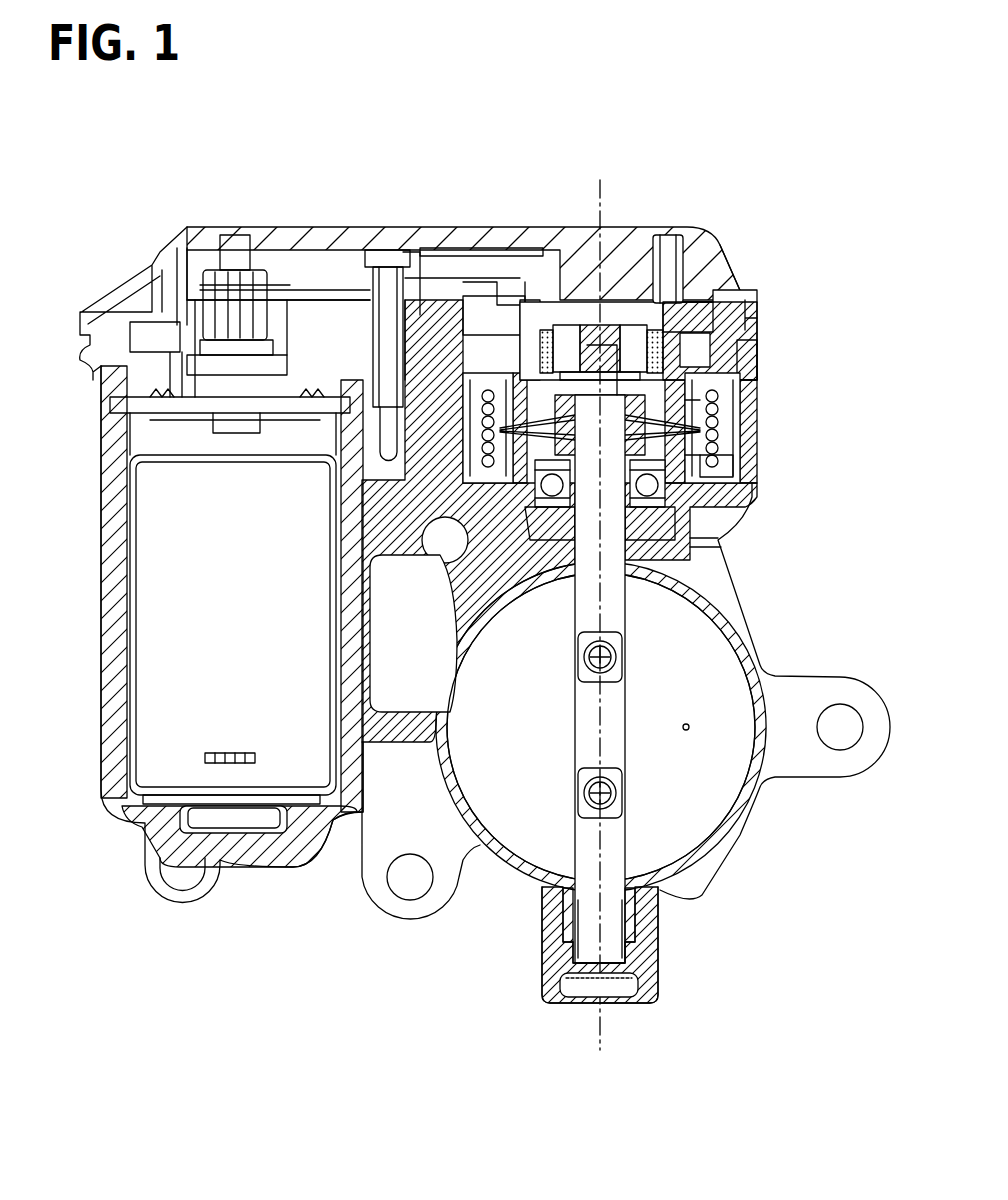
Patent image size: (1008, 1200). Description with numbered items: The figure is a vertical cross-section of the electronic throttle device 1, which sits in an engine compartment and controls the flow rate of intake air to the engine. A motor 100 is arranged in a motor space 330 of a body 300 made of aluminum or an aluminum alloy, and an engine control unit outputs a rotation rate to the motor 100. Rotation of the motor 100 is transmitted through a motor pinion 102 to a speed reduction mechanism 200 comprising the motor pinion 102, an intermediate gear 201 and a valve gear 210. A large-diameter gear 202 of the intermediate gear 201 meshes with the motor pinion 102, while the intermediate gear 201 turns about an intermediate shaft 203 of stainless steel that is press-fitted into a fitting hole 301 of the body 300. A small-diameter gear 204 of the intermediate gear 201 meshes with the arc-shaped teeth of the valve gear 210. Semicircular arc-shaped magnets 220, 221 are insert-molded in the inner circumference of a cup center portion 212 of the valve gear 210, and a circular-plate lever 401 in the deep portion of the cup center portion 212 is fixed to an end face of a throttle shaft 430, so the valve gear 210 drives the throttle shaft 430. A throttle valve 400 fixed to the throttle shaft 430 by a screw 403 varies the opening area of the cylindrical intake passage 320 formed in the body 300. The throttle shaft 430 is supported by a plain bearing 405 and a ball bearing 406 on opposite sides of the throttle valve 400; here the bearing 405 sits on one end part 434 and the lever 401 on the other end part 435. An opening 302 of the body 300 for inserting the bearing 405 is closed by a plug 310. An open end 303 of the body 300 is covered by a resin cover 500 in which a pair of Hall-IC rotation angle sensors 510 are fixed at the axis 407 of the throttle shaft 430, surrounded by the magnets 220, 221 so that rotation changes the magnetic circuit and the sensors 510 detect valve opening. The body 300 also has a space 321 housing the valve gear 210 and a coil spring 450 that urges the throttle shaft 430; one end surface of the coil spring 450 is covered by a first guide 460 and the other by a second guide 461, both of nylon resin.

The electronic throttle device 1 is at (697, 222).
The motor 100 is at (165, 722).
The motor pinion 102 is at (215, 288).
The speed reduction mechanism 200 is at (370, 330).
The intermediate gear 201 is at (347, 313).
The large-diameter gear 202 is at (277, 290).
The intermediate shaft 203 is at (150, 400).
The small-diameter gear 204 is at (420, 263).
The valve gear 210 is at (487, 313).
The cup center portion 212 is at (507, 330).
The magnet 220 is at (717, 297).
The magnet 221 is at (545, 333).
The body 300 is at (653, 574).
The fitting hole 301 is at (348, 440).
The opening 302 is at (620, 982).
The open end 303 is at (743, 320).
The plug 310 is at (578, 992).
The intake passage 320 is at (420, 800).
The space 321 is at (732, 358).
The motor space 330 is at (118, 498).
The throttle valve 400 is at (708, 804).
The lever 401 is at (700, 357).
The screw 403 is at (572, 810).
The bearing 405 is at (630, 937).
The bearing 406 is at (720, 520).
The axis 407 is at (600, 197).
The throttle shaft 430 is at (614, 559).
The one end part 434 is at (585, 948).
The other end part 435 is at (697, 323).
The coil spring 450 is at (710, 433).
The first guide 460 is at (733, 383).
The second guide 461 is at (737, 475).
The cover 500 is at (210, 262).
The rotation angle sensor 510 is at (655, 327).